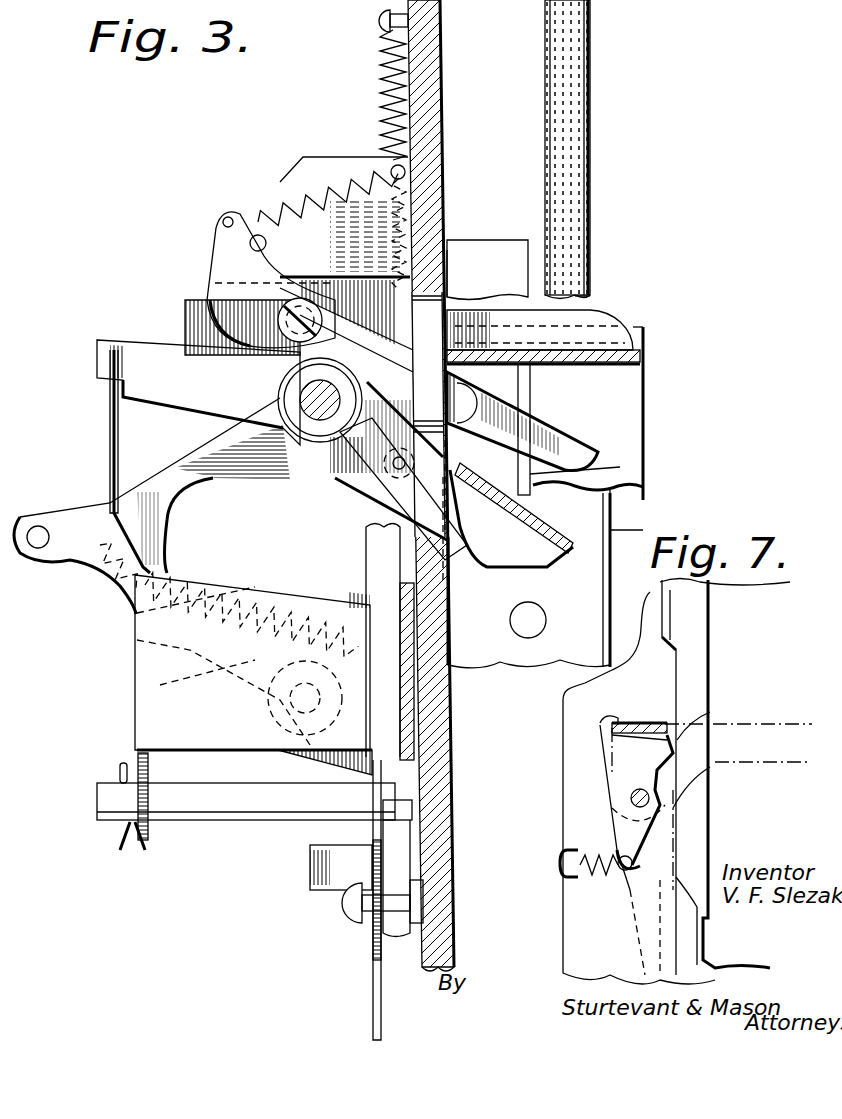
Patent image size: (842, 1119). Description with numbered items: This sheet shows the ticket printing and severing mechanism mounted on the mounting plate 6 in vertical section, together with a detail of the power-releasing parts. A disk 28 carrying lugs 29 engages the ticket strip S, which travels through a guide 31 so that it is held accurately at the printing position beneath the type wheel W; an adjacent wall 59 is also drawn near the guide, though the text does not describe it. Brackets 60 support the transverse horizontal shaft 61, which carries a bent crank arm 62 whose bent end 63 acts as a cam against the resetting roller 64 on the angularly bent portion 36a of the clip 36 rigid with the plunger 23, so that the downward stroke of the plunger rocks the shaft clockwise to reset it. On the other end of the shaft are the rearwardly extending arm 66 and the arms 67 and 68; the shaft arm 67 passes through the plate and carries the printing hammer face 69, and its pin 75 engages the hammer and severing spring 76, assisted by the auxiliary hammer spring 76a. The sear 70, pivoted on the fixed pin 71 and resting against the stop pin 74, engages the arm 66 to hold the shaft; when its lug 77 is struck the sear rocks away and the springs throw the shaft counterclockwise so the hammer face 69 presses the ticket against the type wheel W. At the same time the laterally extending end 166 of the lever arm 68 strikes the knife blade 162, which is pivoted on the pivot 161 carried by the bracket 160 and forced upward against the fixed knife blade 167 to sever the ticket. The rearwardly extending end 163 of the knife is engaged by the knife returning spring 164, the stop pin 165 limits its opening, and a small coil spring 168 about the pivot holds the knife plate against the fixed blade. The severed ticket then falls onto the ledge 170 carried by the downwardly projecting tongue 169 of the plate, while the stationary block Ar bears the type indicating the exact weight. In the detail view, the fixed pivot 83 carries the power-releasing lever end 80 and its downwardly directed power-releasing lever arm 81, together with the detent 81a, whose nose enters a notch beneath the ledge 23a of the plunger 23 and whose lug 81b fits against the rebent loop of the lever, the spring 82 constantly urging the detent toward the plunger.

In FIG. 3, the mounting plate 6 is at (445, 722).
In FIG. 3, the type wheel W is at (580, 76).
In FIG. 3, the hammer and severing spring 76 is at (382, 57).
In FIG. 3, the bracket 160 is at (325, 165).
In FIG. 3, the knife returning spring 164 is at (290, 186).
In FIG. 3, the rearwardly extending end 163 is at (222, 258).
In FIG. 3, the stop pin 165 is at (248, 248).
In FIG. 3, the pivot 161 is at (282, 320).
In FIG. 3, the small coil spring 168 is at (305, 282).
In FIG. 3, the rearwardly extending arm 66 is at (138, 352).
In FIG. 3, the sear 70 is at (108, 432).
In FIG. 3, the bent crank arm 62 is at (150, 476).
In FIG. 3, the transverse horizontal shaft 61 is at (305, 422).
In FIG. 3, the brackets 60 is at (345, 462).
In FIG. 3, the shaft arm 67 is at (392, 470).
In FIG. 3, the pin 75 is at (390, 485).
In FIG. 3, the lever arm 68 is at (368, 540).
In FIG. 3, the auxiliary hammer spring 76a is at (175, 590).
In FIG. 3, the bent end 63 is at (137, 672).
In FIG. 3, the resetting roller 64 is at (310, 752).
In FIG. 3, the fixed pin 71 is at (178, 823).
In FIG. 3, the lug 77 is at (312, 866).
In FIG. 3, the stop pin 74 is at (356, 920).
In FIG. 3, the angularly bent portion 36a is at (395, 812).
In FIG. 3, the clip 36 is at (413, 692).
In FIG. 3, the disk 28 is at (397, 857).
In FIG. 3, the laterally extending end 166 is at (472, 565).
In FIG. 3, the printing hammer face 69 is at (525, 535).
In FIG. 3, the knife blade 162 is at (580, 445).
In FIG. 3, the lugs 29 is at (530, 386).
In FIG. 3, the ledge 170 is at (470, 330).
In FIG. 3, the guide 31 is at (642, 362).
In FIG. 3, the wall 59 is at (642, 328).
In FIG. 3, the ticket strip S is at (590, 345).
In FIG. 3, the fixed knife blade 167 is at (590, 302).
In FIG. 3, the downwardly projecting tongue 169 is at (487, 270).
In FIG. 3, the stationary block Ar is at (466, 255).
In FIG. 7, the plunger 23 is at (690, 614).
In FIG. 7, the ledge 23a is at (721, 767).
In FIG. 7, the power releasing crank lever end 80 is at (762, 728).
In FIG. 7, the lug 81b is at (627, 760).
In FIG. 7, the detent 81a is at (625, 770).
In FIG. 7, the fixed pivot 83 is at (630, 797).
In FIG. 7, the spring 82 is at (578, 882).
In FIG. 7, the power-releasing lever arm 81 is at (648, 928).